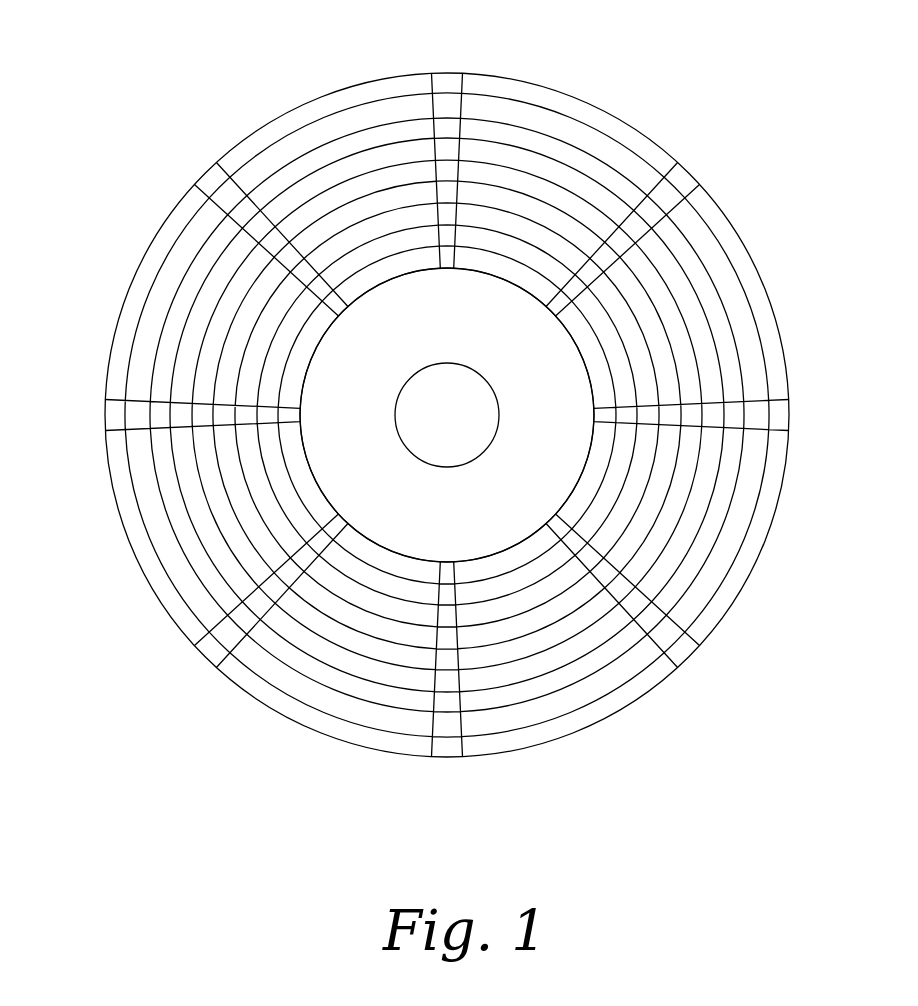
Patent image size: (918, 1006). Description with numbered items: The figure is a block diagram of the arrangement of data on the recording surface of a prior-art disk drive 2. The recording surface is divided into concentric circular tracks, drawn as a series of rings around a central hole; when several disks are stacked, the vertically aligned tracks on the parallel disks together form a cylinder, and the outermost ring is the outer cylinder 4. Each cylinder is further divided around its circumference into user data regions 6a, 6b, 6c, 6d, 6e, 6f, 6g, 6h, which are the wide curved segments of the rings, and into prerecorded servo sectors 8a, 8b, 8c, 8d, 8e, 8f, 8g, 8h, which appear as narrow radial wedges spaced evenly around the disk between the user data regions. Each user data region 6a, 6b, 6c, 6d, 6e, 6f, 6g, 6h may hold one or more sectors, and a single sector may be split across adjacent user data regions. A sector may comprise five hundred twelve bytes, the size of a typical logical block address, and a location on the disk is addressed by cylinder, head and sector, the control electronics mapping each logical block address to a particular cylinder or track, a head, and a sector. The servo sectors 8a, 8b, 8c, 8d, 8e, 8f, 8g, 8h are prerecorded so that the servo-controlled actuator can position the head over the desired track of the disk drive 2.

The disk drive 2 is at (238, 122).
The outer cylinder 4 is at (547, 90).
The user data region 6a is at (642, 143).
The user data region 6b is at (755, 283).
The user data region 6c is at (757, 535).
The user data region 6d is at (635, 690).
The user data region 6e is at (260, 690).
The user data region 6f is at (138, 545).
The user data region 6g is at (142, 280).
The user data region 6h is at (290, 120).
The prerecorded servo sector 8a is at (445, 82).
The prerecorded servo sector 8b is at (683, 178).
The prerecorded servo sector 8c is at (778, 415).
The prerecorded servo sector 8d is at (680, 655).
The prerecorded servo sector 8e is at (447, 755).
The prerecorded servo sector 8f is at (215, 655).
The prerecorded servo sector 8g is at (115, 415).
The prerecorded servo sector 8h is at (210, 178).